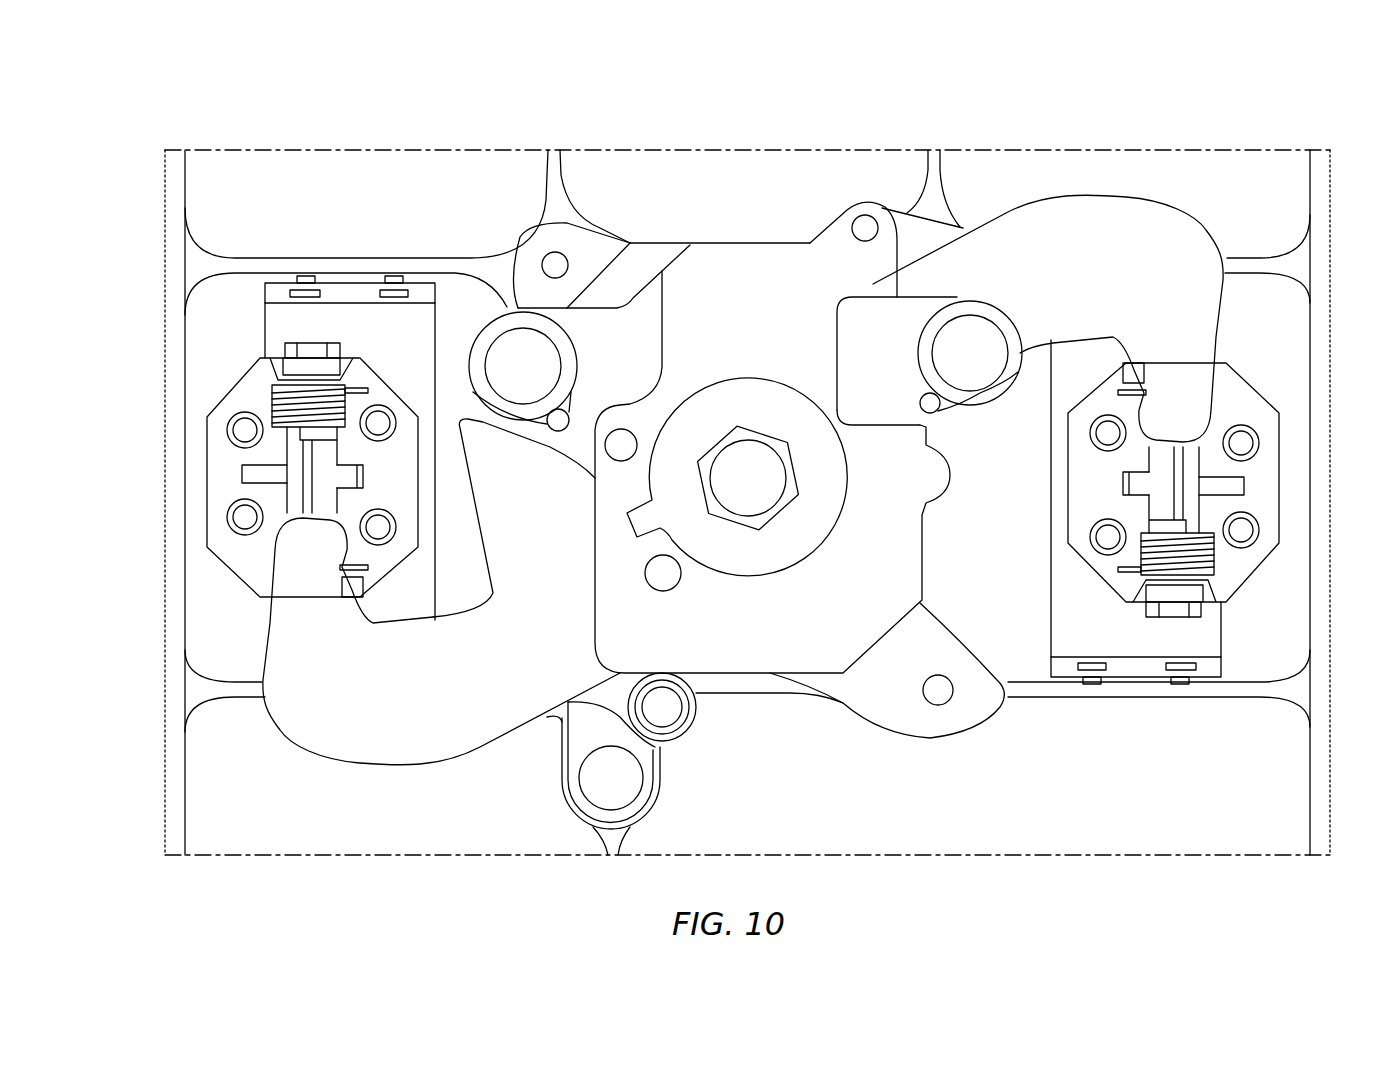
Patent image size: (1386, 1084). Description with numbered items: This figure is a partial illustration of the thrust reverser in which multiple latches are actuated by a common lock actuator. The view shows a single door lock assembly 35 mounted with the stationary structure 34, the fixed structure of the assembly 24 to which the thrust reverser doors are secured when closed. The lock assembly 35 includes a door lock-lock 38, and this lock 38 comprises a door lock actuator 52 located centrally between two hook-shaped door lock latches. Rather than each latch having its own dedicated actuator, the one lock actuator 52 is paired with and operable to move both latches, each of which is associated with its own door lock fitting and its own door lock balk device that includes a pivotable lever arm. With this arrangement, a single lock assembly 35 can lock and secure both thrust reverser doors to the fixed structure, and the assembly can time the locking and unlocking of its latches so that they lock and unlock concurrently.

The vehicle body / mounting assembly 24 is at (1270, 130).
The stationary structure 34 is at (146, 294).
The door lock assembly 35 is at (853, 188).
The door lock-lock 38 is at (745, 466).
The door lock actuator 52 is at (720, 228).